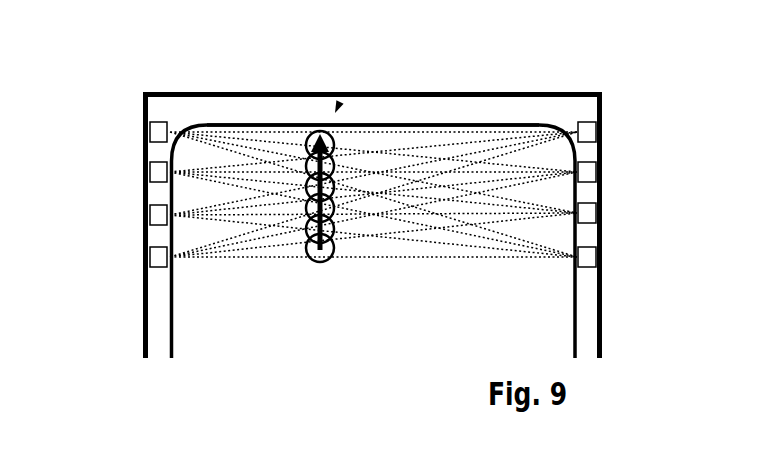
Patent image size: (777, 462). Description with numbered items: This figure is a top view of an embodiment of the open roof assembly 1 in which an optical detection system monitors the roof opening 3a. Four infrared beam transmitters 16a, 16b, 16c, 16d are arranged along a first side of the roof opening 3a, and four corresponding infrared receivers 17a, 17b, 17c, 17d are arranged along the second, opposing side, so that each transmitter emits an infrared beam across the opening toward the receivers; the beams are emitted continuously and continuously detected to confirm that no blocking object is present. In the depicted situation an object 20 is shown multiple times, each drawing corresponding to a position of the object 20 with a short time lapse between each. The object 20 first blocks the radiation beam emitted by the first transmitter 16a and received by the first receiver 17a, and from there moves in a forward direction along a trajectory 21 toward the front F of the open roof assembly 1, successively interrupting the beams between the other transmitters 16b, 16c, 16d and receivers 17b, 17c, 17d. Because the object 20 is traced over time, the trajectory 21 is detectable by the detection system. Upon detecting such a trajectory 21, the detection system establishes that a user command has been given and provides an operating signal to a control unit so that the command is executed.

The open roof assembly 1 is at (410, 112).
The roof opening 3a is at (297, 297).
The front F is at (233, 115).
The object 20 is at (337, 108).
The trajectory 21 is at (302, 165).
The first transmitter 16a is at (158, 253).
The second transmitter 16b is at (153, 215).
The third transmitter 16c is at (153, 172).
The fourth transmitter 16d is at (153, 132).
The first receiver 17a is at (590, 255).
The second receiver 17b is at (590, 215).
The third receiver 17c is at (590, 172).
The fourth receiver 17d is at (590, 132).